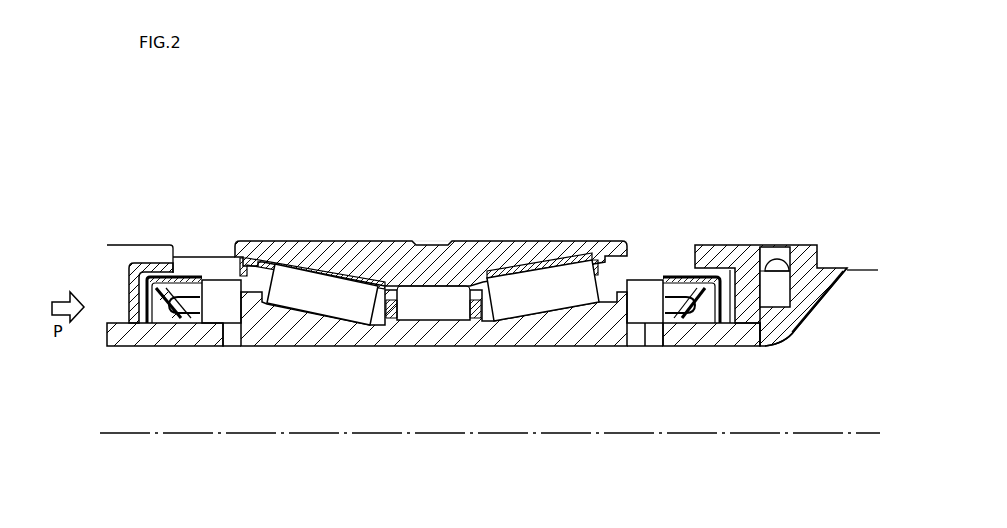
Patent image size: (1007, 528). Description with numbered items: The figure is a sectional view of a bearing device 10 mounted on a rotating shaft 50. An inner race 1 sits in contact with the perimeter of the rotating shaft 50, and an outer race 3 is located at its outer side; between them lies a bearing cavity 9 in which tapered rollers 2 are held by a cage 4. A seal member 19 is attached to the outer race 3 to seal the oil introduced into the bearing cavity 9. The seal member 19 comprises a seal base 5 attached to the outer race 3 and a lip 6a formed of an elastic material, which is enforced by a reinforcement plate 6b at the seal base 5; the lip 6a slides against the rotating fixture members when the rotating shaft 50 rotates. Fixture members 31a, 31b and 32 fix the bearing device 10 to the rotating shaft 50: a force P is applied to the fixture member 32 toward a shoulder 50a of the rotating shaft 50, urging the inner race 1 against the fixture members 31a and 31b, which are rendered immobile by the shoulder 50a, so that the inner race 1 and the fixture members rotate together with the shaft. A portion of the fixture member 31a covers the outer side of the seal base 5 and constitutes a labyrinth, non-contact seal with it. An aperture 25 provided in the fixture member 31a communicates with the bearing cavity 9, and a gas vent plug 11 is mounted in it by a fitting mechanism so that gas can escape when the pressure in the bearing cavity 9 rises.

The inner race 1 is at (520, 332).
The tapered roller 2 is at (545, 282).
The outer race 3 is at (490, 266).
The cage 4 is at (320, 280).
The seal base 5 is at (217, 284).
The lip 6a is at (194, 292).
The reinforcement plate 6b is at (176, 277).
The bearing cavity 9 is at (432, 302).
The bearing device 10 is at (644, 121).
The gas vent plug 11 is at (772, 252).
The seal member 19 is at (690, 290).
The aperture 25 is at (787, 262).
The fixture member 31a is at (720, 256).
The fixture member 31b is at (760, 357).
The fixture member 32 is at (107, 357).
The rotating shaft 50 is at (568, 405).
The shoulder 50a is at (803, 322).